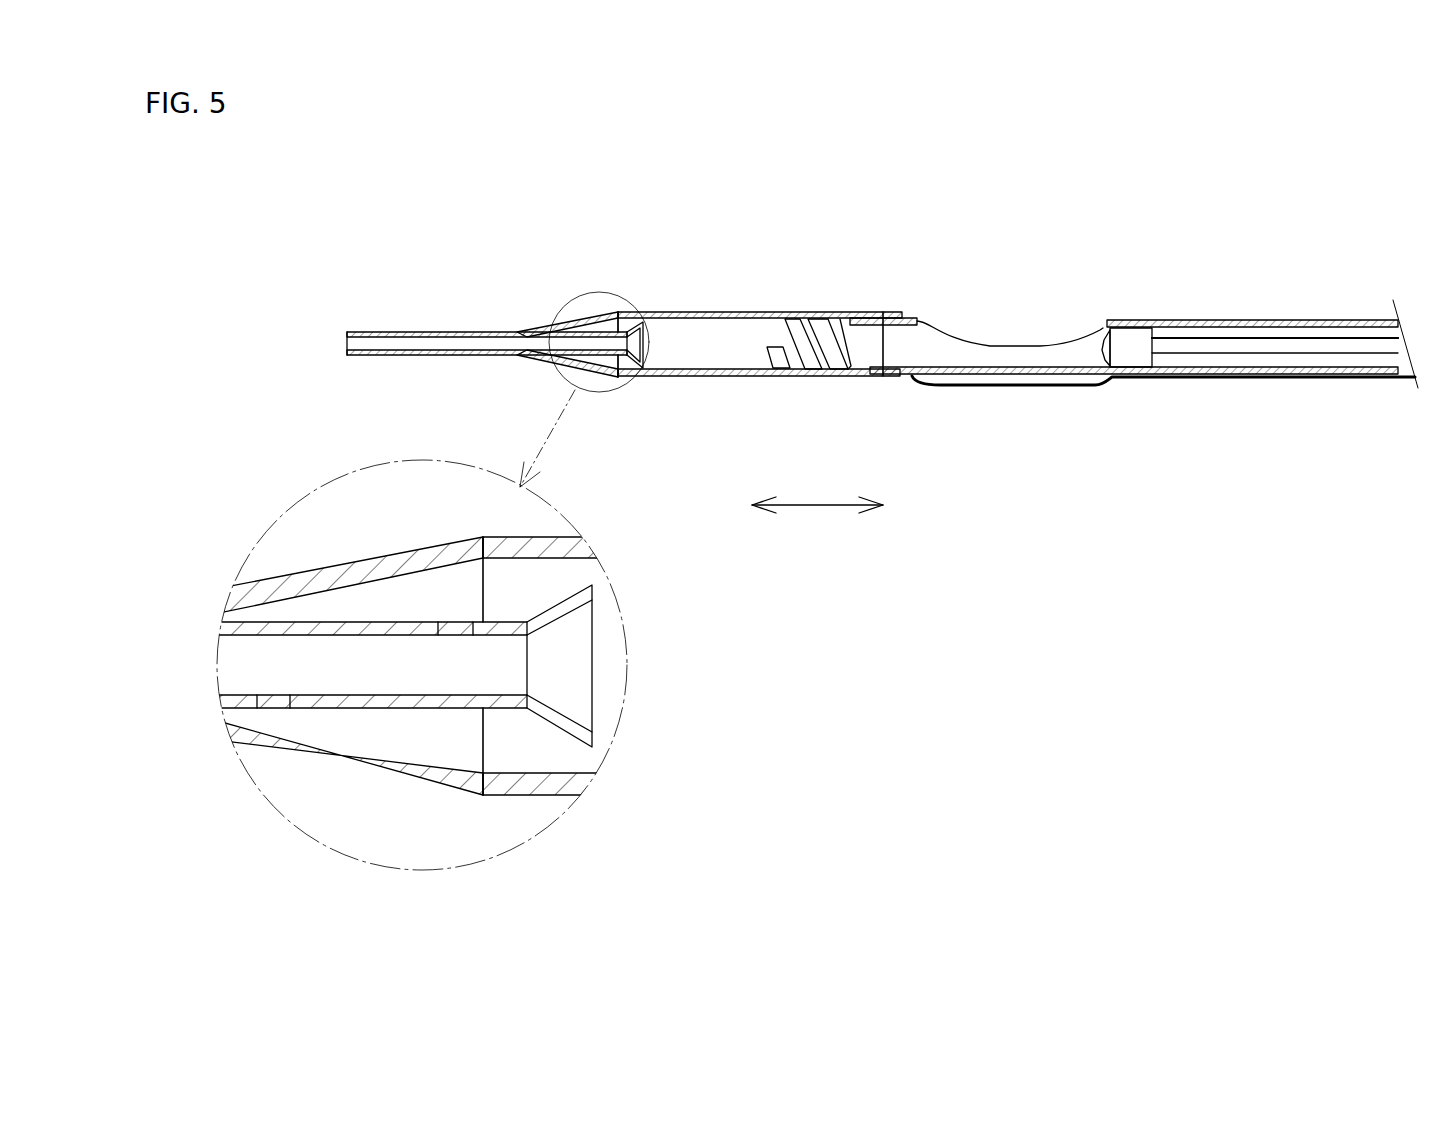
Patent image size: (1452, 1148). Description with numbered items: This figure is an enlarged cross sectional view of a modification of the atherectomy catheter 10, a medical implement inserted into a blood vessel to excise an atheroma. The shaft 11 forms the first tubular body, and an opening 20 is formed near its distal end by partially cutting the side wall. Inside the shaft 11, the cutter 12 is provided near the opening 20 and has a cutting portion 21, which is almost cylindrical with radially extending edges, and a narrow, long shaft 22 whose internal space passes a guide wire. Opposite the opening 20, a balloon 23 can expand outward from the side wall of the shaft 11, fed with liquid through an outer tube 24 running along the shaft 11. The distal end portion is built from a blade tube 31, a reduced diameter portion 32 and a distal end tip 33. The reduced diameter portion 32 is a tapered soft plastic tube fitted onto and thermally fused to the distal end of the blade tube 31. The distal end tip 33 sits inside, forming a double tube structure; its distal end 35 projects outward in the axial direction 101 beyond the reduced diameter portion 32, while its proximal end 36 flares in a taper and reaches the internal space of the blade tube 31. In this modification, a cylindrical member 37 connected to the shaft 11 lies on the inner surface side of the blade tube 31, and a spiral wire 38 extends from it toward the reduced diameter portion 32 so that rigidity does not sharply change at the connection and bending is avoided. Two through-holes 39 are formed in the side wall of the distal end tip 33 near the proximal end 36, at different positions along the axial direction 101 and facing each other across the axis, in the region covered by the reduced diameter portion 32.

The atherectomy catheter 10 is at (1062, 178).
The shaft 11 is at (1257, 320).
The cutter 12 is at (1187, 337).
The opening 20 is at (1000, 328).
The cutting portion 21 is at (1100, 330).
The shaft 22 is at (1298, 337).
The balloon 23 is at (1010, 386).
The outer tube 24 is at (1285, 378).
The blade tube 31 is at (748, 312).
The reduced diameter portion 32 is at (337, 565).
The distal end tip 33 is at (423, 332).
The distal end 35 is at (347, 339).
The proximal end 36 is at (592, 668).
The cylindrical member 37 is at (865, 313).
The wire 38 is at (767, 369).
The through-hole 39 is at (455, 620).
The axial direction 101 is at (818, 506).